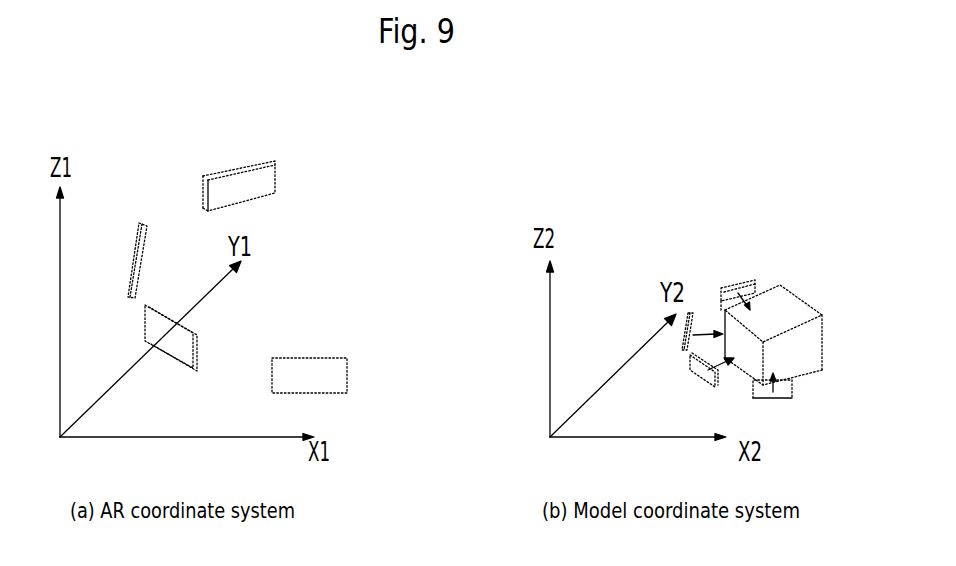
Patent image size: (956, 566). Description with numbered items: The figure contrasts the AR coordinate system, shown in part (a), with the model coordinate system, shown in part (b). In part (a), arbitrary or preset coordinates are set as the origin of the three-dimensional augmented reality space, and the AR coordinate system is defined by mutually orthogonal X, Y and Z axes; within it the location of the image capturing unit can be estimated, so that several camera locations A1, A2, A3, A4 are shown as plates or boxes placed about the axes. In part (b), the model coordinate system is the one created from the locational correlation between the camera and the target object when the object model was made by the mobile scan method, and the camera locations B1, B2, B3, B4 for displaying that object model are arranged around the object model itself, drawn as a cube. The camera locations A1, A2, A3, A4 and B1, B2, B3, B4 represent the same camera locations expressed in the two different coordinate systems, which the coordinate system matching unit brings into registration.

The camera location A A1 is at (239, 179).
The camera location A A2 is at (126, 260).
The camera location A A3 is at (171, 346).
The camera location A A4 is at (309, 387).
The camera location B B1 is at (738, 288).
The camera location B B2 is at (693, 331).
The camera location B B3 is at (709, 376).
The camera location B B4 is at (772, 395).